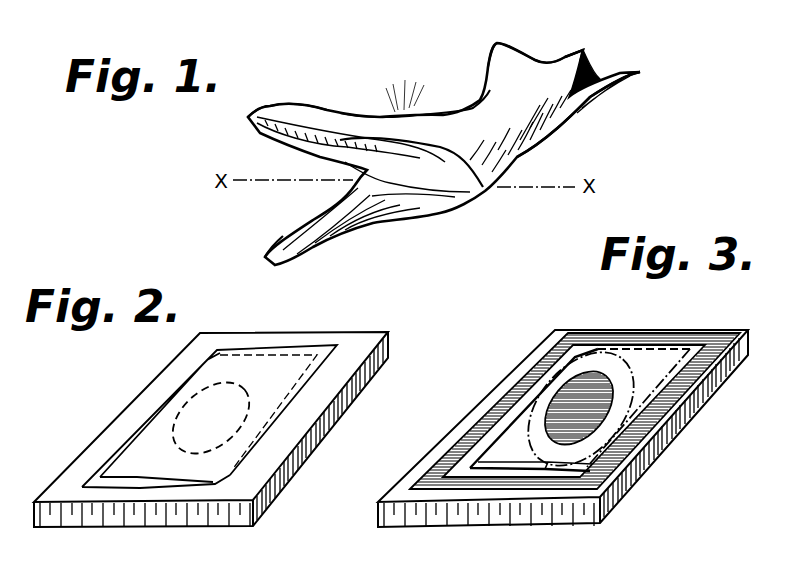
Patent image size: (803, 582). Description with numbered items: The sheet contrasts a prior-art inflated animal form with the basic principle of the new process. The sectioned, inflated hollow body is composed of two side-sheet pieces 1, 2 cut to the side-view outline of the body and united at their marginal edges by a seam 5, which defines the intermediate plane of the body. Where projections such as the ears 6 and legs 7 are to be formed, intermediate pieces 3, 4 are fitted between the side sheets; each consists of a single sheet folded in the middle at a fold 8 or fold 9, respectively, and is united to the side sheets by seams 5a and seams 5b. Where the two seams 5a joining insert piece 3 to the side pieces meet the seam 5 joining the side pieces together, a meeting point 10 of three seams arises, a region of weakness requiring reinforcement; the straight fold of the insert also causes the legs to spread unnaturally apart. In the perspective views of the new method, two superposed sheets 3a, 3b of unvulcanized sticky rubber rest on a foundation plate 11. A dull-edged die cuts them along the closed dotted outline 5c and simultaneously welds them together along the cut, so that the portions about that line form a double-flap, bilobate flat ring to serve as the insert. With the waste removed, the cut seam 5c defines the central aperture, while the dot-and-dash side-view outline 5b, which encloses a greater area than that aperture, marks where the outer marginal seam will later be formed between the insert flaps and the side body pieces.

In FIG. 1, the side-sheet piece 1 is at (380, 223).
In FIG. 3, the side-sheet piece 1 is at (470, 495).
In FIG. 1, the side-sheet piece 2 is at (423, 135).
In FIG. 1, the intermediate piece 3 is at (583, 100).
In FIG. 2, the rubber sheet 3a is at (140, 480).
In FIG. 3, the rubber sheet 3a is at (527, 470).
In FIG. 2, the rubber sheet 3b is at (145, 460).
In FIG. 3, the rubber sheet 3b is at (510, 448).
In FIG. 1, the intermediate piece 4 is at (320, 147).
In FIG. 1, the seam 5 is at (497, 166).
In FIG. 1, the seam 5a is at (539, 98).
In FIG. 1, the seam 5b is at (248, 118).
In FIG. 3, the seam 5b is at (633, 365).
In FIG. 2, the cut seam line 5c is at (193, 402).
In FIG. 3, the cut seam line 5c is at (567, 397).
In FIG. 1, the ear 6 is at (585, 50).
In FIG. 1, the leg 7 is at (250, 118).
In FIG. 1, the fold 8 is at (578, 82).
In FIG. 1, the fold 9 is at (360, 180).
In FIG. 1, the meeting point 10 is at (447, 118).
In FIG. 2, the foundation plate 11 is at (199, 510).
In FIG. 3, the foundation plate 11 is at (513, 510).